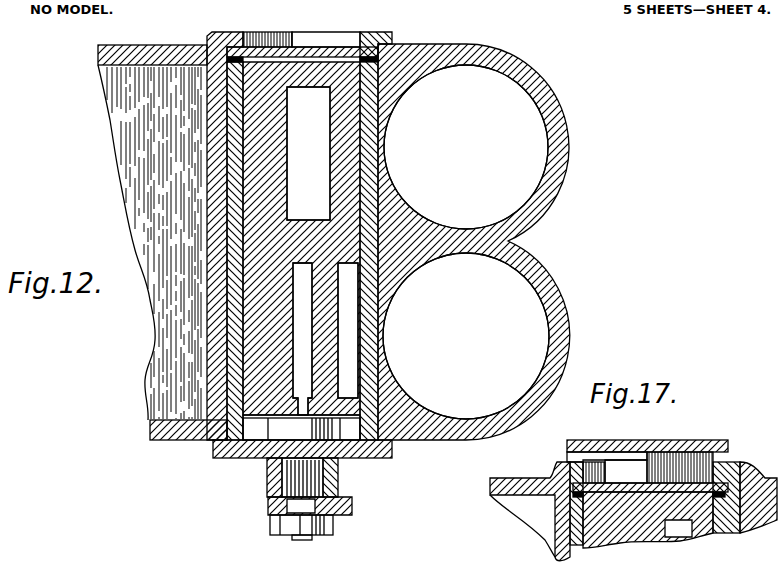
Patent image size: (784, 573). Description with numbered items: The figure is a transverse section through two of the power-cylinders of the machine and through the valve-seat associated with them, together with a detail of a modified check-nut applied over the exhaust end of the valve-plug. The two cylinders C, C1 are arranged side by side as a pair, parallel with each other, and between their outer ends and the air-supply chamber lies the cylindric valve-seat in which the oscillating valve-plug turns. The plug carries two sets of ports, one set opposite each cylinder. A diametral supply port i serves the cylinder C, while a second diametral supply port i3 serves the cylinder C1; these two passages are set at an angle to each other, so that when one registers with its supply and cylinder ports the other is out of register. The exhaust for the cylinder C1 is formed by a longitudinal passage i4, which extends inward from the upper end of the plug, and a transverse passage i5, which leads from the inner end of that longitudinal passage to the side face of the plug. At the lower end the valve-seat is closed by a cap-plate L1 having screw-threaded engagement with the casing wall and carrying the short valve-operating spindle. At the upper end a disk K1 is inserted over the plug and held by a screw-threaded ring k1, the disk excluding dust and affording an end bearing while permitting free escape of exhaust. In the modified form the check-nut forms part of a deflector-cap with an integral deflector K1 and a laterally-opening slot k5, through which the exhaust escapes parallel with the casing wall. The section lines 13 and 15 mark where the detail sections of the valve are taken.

In FIG. 12, the disk K1 is at (285, 52).
In FIG. 17, the disk K1 is at (684, 441).
In FIG. 12, the screw-threaded ring k1 is at (370, 56).
In FIG. 17, the laterally-opening slot k5 is at (580, 457).
In FIG. 12, the section line 13 13 is at (608, 149).
In FIG. 12, the section line 15 15 is at (452, 343).
In FIG. 12, the supply port i is at (308, 153).
In FIG. 12, the supply port i3 is at (302, 339).
In FIG. 12, the longitudinal exhaust passage i4 is at (312, 248).
In FIG. 12, the transverse exhaust passage i5 is at (348, 330).
In FIG. 12, the power-cylinder C is at (466, 147).
In FIG. 12, the power-cylinder C1 is at (466, 336).
In FIG. 12, the cap-plate L1 is at (356, 460).